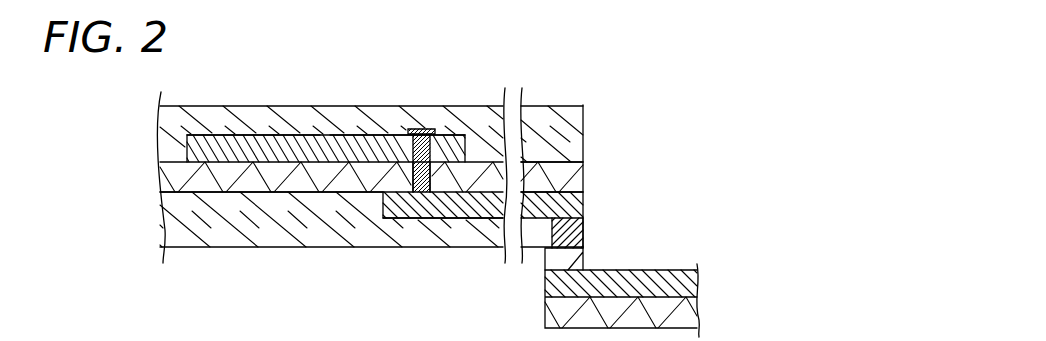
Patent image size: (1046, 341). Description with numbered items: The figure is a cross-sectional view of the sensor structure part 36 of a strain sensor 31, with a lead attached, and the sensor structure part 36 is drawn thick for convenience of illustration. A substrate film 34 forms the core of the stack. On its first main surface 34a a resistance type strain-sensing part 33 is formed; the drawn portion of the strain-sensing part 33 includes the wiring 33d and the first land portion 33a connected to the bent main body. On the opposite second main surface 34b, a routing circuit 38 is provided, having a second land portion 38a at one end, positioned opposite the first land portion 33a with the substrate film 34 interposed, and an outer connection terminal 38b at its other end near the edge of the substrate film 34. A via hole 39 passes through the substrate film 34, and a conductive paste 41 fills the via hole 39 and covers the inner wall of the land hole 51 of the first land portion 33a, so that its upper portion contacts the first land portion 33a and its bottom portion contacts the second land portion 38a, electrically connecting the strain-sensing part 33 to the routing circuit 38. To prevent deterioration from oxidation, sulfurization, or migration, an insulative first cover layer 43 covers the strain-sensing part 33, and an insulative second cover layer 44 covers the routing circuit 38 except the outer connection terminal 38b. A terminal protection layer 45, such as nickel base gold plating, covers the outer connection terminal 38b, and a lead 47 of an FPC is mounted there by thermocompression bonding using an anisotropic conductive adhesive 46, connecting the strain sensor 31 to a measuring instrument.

The strain sensor 31 is at (683, 177).
The strain-sensing part 33 is at (342, 97).
The first land portion 33a is at (452, 133).
The wiring 33d is at (294, 140).
The substrate film 34 is at (223, 180).
The first main surface 34a is at (549, 150).
The second main surface 34b is at (256, 192).
The sensor structure part 36 is at (612, 208).
The routing circuit 38 is at (462, 212).
The second land portion 38a is at (422, 216).
The outer connection terminal 38b is at (556, 195).
The via hole 39 is at (407, 167).
The conductive paste 41 is at (422, 130).
The first cover layer 43 is at (241, 112).
The second cover layer 44 is at (303, 233).
The terminal protection layer 45 is at (583, 233).
The anisotropic conductive adhesive 46 is at (583, 258).
The lead 47 is at (668, 266).
The land hole 51 is at (412, 140).